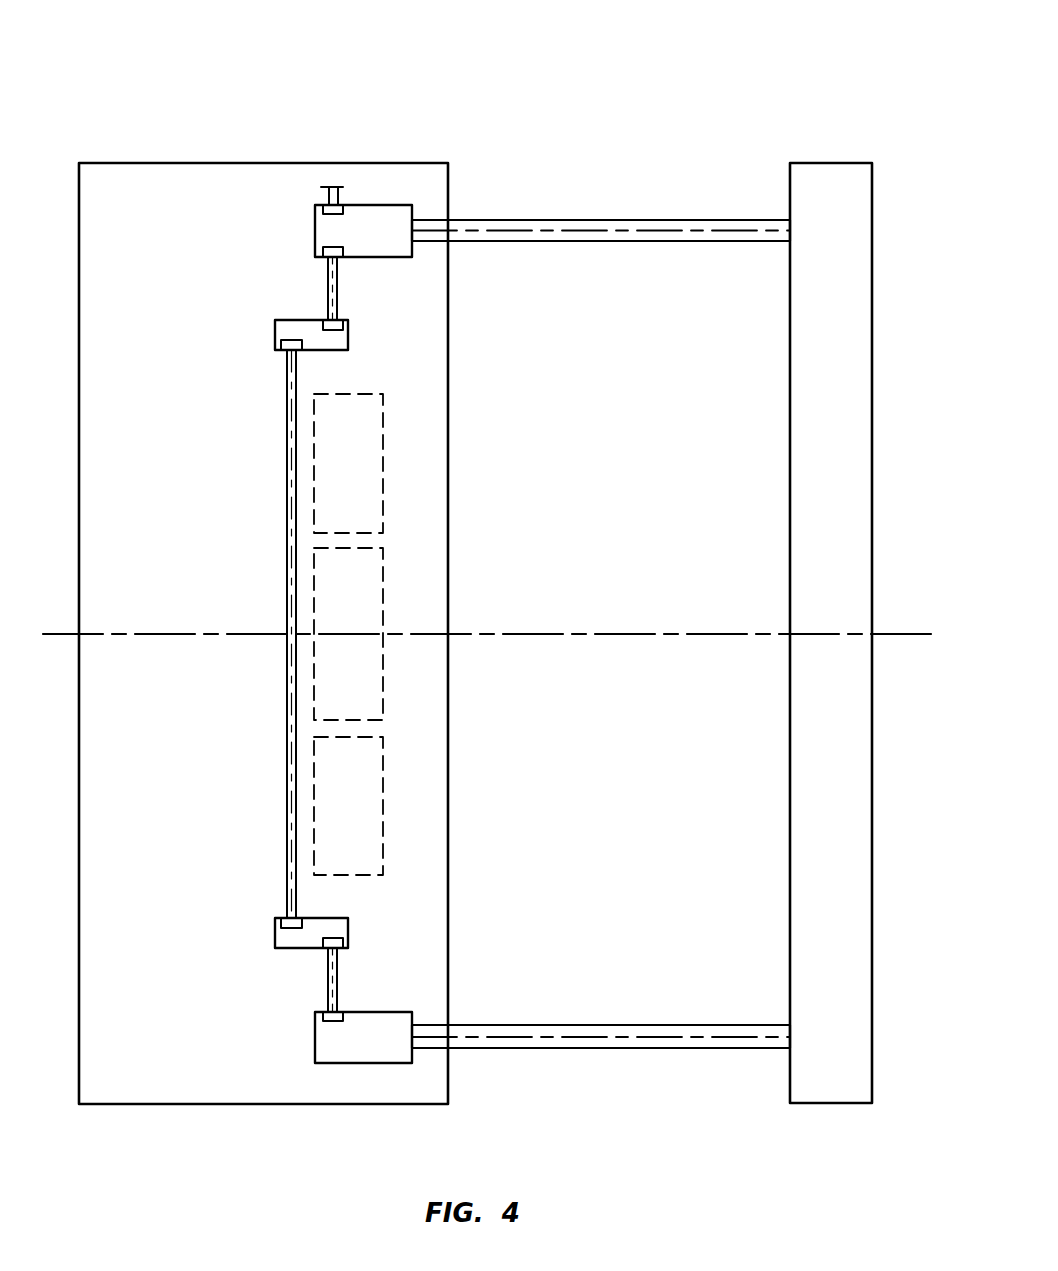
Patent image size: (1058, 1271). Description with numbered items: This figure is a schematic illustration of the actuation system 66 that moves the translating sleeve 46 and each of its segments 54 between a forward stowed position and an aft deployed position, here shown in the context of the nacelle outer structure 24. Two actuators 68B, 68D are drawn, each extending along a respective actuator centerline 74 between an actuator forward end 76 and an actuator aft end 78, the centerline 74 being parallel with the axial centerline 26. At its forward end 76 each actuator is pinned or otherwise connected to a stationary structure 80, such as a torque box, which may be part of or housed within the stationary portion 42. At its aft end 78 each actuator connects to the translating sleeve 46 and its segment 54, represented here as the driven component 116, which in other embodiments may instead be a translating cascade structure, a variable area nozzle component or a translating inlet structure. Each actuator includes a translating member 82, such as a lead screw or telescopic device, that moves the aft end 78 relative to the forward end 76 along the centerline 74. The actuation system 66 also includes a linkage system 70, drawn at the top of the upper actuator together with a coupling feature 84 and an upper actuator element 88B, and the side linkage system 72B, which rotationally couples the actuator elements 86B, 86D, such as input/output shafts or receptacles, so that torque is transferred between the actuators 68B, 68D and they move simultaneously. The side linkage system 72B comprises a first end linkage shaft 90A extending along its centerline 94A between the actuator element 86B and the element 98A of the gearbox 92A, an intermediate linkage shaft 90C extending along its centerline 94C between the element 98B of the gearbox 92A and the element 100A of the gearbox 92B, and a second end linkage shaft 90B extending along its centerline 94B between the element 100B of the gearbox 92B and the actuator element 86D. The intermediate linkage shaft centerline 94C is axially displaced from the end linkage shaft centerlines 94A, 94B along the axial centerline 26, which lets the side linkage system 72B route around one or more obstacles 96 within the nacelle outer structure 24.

The nacelle outer structure 24 is at (97, 133).
The stationary portion 42 is at (175, 163).
The stationary structure 80 is at (263, 633).
The actuation system 66 is at (717, 88).
The translating sleeve 46 is at (842, 163).
The translating sleeve segment 54 is at (875, 633).
The component 116 is at (868, 295).
The translating member 82 is at (666, 220).
The actuator centerline 74 is at (600, 231).
The actuator aft end 78 is at (790, 228).
The actuator forward end 76 is at (315, 213).
The actuator 68B is at (315, 233).
The actuator 68D is at (315, 1035).
The linkage system 70 is at (345, 197).
The pin 84 is at (333, 187).
The upper hinge 88B is at (340, 222).
The actuator element 86B is at (342, 250).
The actuator element 86D is at (333, 1022).
The first end linkage shaft 90A is at (337, 295).
The linkage shaft centerline 94A is at (327, 275).
The side linkage system 72B is at (247, 783).
The gearbox 92A is at (274, 332).
The gearbox element 98A is at (343, 330).
The gearbox element 98B is at (283, 345).
The intermediate linkage shaft 90C is at (287, 708).
The intermediate linkage shaft centerline 94C is at (290, 465).
The gearbox 92B is at (274, 936).
The gearbox element 100A is at (283, 922).
The gearbox element 100B is at (334, 940).
The second end linkage shaft 90B is at (337, 988).
The linkage shaft centerline 94B is at (327, 993).
The obstacle 96 is at (383, 470).
The axial centerline 26 is at (928, 650).